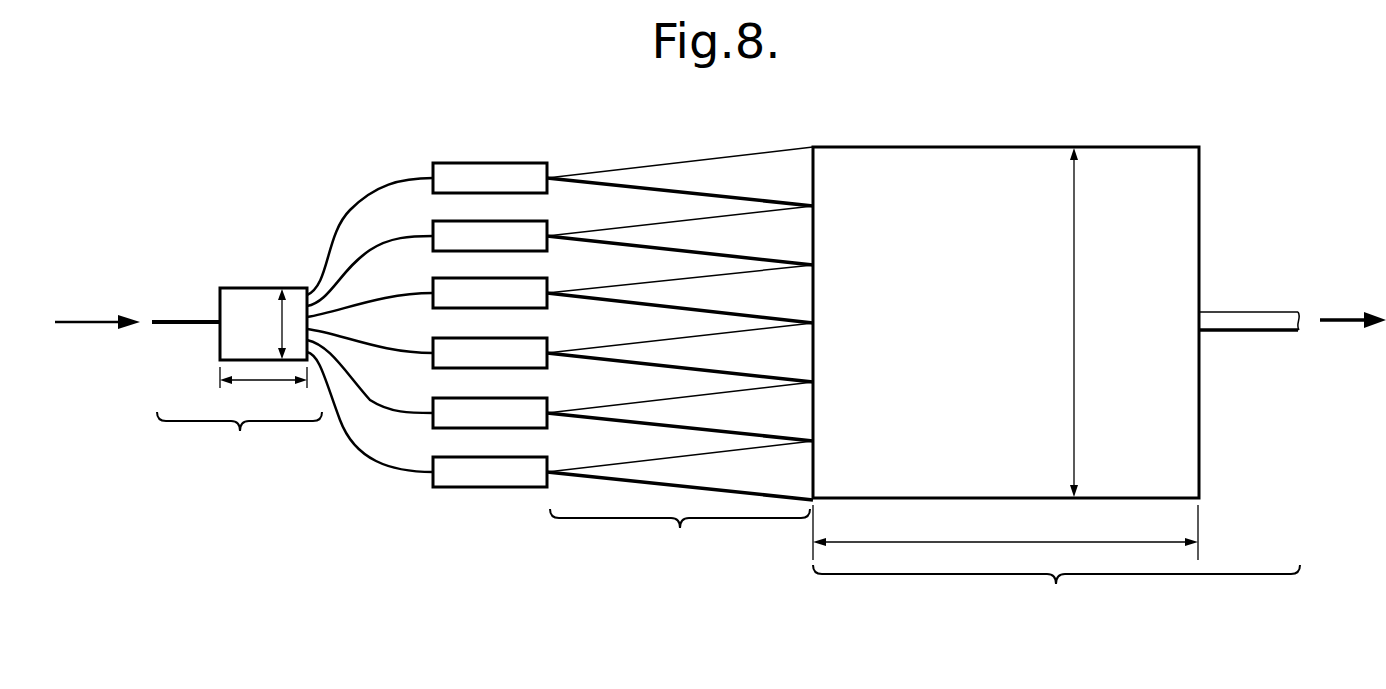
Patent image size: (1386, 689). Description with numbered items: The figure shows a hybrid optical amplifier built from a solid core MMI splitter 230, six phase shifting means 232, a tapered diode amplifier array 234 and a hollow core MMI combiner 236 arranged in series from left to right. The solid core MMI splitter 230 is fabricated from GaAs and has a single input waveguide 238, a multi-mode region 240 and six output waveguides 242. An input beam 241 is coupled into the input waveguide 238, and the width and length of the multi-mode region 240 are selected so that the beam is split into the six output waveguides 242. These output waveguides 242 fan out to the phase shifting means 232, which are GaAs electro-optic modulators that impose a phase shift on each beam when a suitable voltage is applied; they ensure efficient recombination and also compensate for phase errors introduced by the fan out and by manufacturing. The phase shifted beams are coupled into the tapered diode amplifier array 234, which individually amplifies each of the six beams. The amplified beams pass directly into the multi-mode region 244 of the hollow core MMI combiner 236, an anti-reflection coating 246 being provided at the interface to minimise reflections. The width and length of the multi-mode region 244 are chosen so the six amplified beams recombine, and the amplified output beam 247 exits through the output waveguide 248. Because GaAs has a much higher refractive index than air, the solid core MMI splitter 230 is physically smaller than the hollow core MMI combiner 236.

The solid core MMI splitter 230 is at (239, 440).
The phase shifting means 232 is at (453, 173).
The tapered diode amplifier array 234 is at (680, 356).
The hollow core MMI combiner 236 is at (1056, 561).
The input waveguide 238 is at (177, 320).
The multi-mode region 240 is at (248, 290).
The input beam 241 is at (83, 326).
The output waveguides 242 is at (344, 224).
The multi-mode region 244 is at (970, 165).
The anti-reflection coating 246 is at (822, 151).
The amplified output beam 247 is at (1347, 325).
The output waveguide 248 is at (1248, 318).